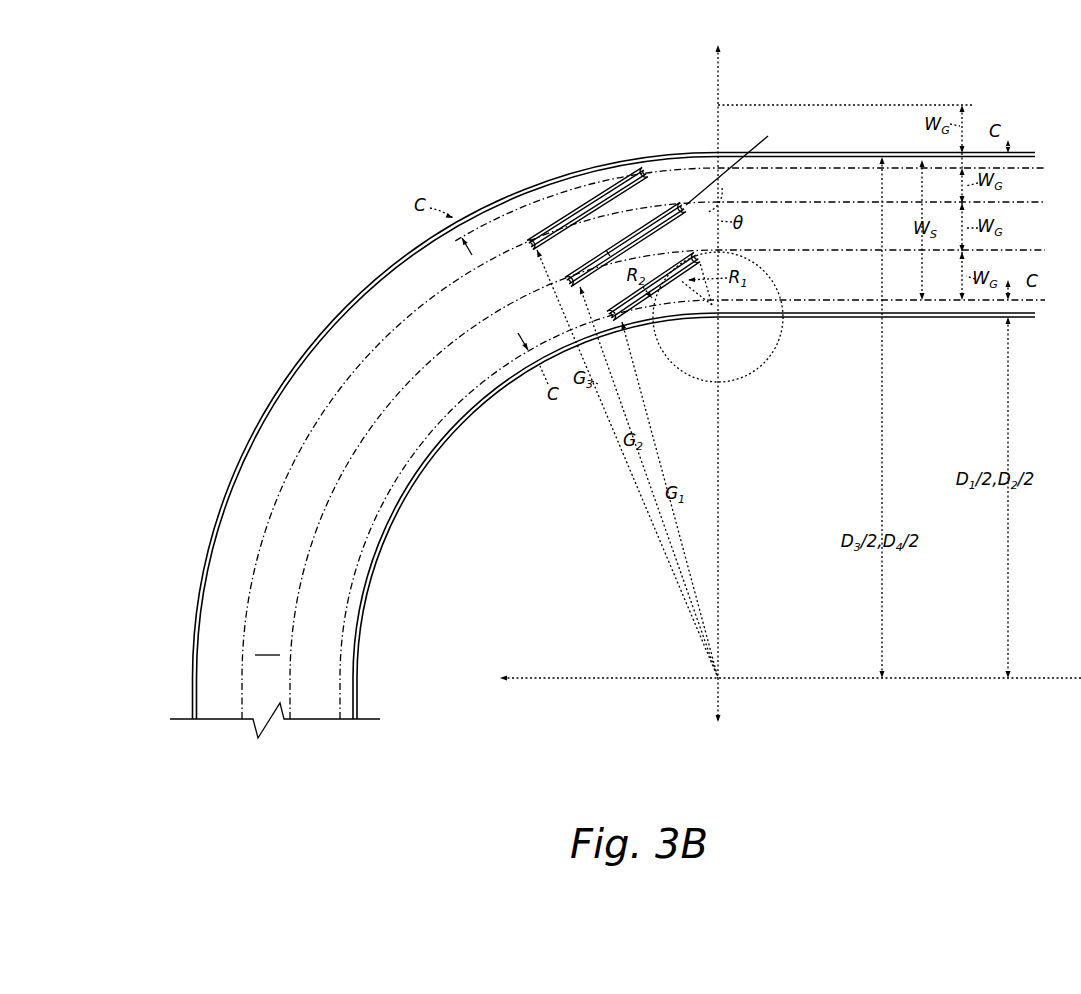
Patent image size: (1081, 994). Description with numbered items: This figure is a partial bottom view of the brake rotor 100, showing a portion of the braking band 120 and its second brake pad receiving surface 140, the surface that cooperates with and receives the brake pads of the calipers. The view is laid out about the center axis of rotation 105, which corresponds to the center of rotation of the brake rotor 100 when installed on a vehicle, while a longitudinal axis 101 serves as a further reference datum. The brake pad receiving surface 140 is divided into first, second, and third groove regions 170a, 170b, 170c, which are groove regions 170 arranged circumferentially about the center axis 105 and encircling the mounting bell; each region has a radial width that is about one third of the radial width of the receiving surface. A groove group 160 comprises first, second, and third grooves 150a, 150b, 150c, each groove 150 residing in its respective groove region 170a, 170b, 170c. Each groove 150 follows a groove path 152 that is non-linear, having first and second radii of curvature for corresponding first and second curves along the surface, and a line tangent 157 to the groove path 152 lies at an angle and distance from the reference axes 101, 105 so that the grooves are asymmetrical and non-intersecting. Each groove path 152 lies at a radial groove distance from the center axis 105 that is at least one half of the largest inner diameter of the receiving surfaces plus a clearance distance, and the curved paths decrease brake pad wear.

The brake rotor 100 is at (602, 389).
The longitudinal axis 101 is at (718, 400).
The center axis of rotation 105 is at (935, 679).
The braking band 120 is at (333, 293).
The second brake pad receiving surface 140 is at (267, 644).
The groove 150 is at (586, 174).
The first groove 150a is at (693, 252).
The second groove 150b is at (667, 203).
The third groove 150c is at (627, 165).
The groove path 152 is at (607, 250).
The line tangent 157 is at (743, 163).
The groove group 160 is at (714, 384).
The groove region 170 is at (586, 460).
The first groove region 170a is at (345, 527).
The second groove region 170b is at (300, 497).
The third groove region 170c is at (310, 392).